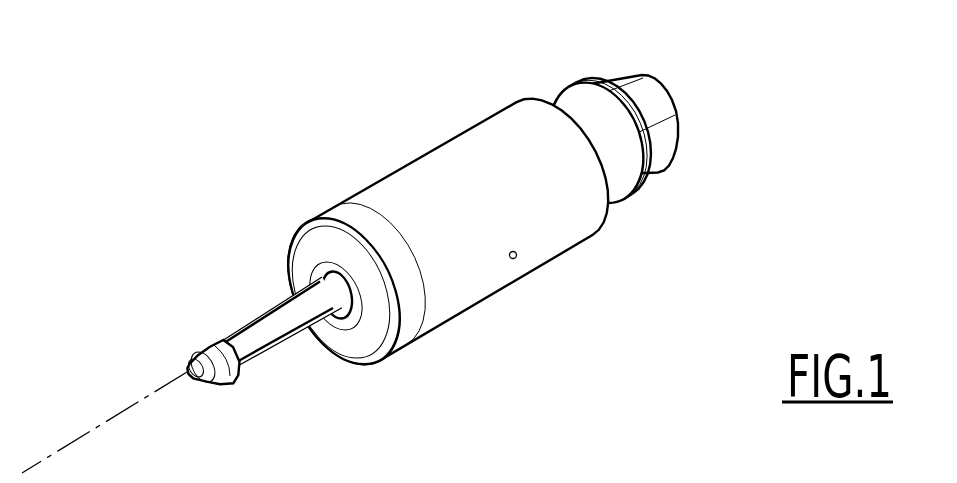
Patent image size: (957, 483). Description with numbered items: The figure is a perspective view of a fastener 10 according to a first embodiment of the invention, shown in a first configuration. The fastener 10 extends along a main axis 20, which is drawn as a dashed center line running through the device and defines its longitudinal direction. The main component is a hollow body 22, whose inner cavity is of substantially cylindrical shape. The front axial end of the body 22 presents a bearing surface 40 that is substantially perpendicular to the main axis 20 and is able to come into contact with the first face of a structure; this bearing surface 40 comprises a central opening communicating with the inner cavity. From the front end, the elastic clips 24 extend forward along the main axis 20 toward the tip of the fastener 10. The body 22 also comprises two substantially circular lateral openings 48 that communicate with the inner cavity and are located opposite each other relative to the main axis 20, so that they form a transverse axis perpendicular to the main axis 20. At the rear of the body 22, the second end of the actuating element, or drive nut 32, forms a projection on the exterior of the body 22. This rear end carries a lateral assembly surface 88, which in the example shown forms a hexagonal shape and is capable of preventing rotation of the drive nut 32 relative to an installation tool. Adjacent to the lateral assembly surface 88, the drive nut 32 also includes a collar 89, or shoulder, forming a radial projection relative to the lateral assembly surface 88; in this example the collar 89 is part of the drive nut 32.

The fastener 10 is at (388, 241).
The main axis 20 is at (103, 424).
The body 22 is at (432, 168).
The elastic clips 24 is at (276, 332).
The actuating element 32 is at (669, 91).
The bearing surface 40 is at (300, 250).
The lateral openings 48 is at (512, 258).
The lateral assembly surface 88 is at (657, 143).
The collar 89 is at (564, 86).